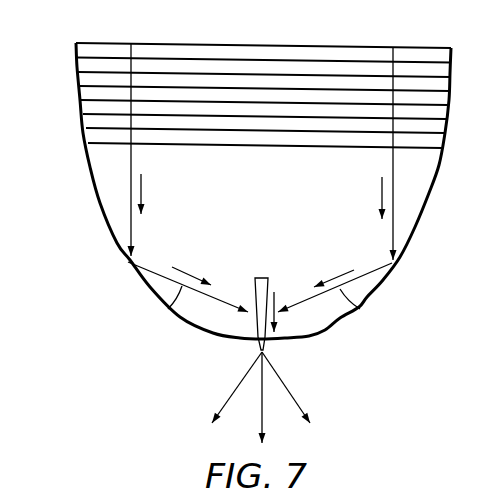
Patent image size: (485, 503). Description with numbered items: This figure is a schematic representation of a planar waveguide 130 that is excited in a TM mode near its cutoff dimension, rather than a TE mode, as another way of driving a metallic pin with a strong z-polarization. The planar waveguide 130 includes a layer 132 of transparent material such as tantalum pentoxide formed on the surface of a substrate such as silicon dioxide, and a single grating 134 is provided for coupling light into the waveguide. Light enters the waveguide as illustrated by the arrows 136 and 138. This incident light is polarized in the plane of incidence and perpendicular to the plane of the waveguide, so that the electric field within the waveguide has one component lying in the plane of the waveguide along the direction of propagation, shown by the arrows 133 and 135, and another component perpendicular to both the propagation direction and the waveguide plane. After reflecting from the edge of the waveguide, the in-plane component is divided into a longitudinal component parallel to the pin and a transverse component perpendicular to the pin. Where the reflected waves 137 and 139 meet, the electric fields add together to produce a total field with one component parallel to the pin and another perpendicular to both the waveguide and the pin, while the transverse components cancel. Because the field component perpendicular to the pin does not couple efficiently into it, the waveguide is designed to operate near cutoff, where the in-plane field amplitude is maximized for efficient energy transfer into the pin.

The planar waveguide 130 is at (258, 45).
The layer of transparent material 132 is at (100, 206).
The arrow 133 is at (142, 192).
The grating 134 is at (98, 122).
The arrow 135 is at (380, 194).
The arrow 136 is at (130, 53).
The reflected wave 137 is at (168, 309).
The arrow 138 is at (394, 70).
The reflected wave 139 is at (360, 309).